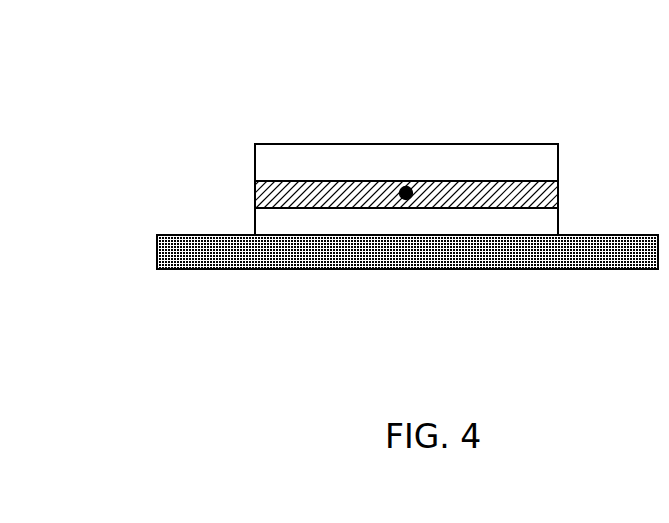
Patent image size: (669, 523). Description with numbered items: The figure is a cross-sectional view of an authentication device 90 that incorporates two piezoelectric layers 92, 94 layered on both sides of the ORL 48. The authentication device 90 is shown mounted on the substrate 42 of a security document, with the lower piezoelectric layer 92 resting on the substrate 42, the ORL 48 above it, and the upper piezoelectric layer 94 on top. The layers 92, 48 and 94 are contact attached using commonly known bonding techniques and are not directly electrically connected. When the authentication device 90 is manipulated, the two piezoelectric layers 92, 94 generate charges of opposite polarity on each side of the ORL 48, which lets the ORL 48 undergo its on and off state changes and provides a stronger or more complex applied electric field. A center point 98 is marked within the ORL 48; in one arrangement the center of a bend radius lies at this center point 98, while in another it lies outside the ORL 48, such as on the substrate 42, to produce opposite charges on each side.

The substrate 42 is at (410, 268).
The ORL 48 is at (256, 195).
The authentication device 90 is at (578, 142).
The piezoelectric layer 92 is at (255, 223).
The piezoelectric layer 94 is at (408, 143).
The center point 98 is at (412, 188).